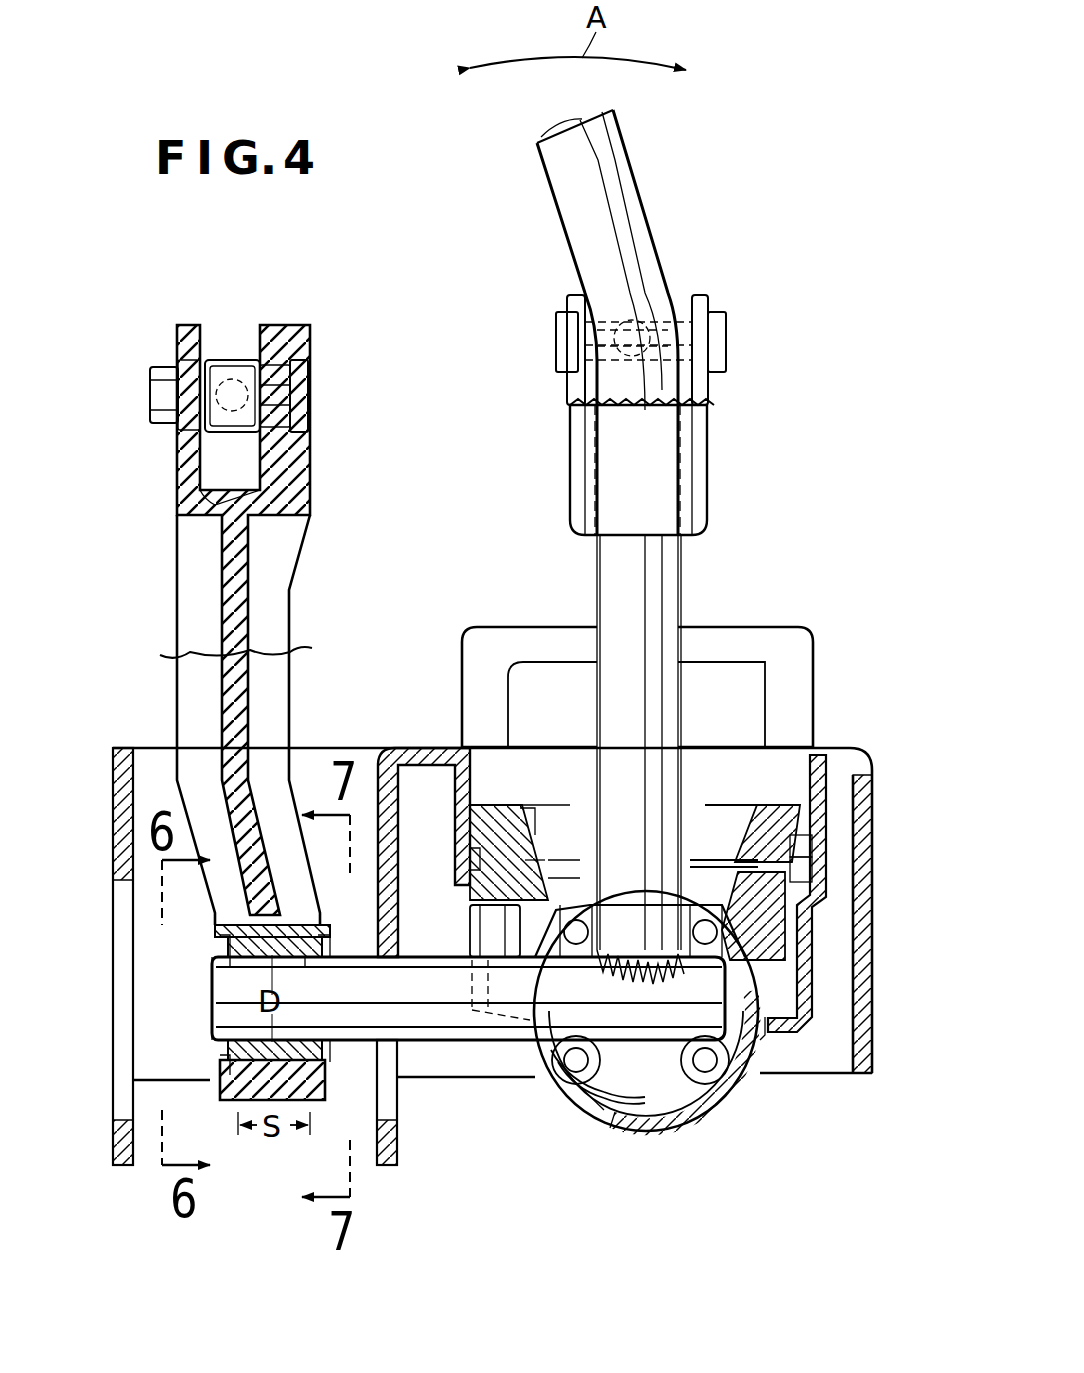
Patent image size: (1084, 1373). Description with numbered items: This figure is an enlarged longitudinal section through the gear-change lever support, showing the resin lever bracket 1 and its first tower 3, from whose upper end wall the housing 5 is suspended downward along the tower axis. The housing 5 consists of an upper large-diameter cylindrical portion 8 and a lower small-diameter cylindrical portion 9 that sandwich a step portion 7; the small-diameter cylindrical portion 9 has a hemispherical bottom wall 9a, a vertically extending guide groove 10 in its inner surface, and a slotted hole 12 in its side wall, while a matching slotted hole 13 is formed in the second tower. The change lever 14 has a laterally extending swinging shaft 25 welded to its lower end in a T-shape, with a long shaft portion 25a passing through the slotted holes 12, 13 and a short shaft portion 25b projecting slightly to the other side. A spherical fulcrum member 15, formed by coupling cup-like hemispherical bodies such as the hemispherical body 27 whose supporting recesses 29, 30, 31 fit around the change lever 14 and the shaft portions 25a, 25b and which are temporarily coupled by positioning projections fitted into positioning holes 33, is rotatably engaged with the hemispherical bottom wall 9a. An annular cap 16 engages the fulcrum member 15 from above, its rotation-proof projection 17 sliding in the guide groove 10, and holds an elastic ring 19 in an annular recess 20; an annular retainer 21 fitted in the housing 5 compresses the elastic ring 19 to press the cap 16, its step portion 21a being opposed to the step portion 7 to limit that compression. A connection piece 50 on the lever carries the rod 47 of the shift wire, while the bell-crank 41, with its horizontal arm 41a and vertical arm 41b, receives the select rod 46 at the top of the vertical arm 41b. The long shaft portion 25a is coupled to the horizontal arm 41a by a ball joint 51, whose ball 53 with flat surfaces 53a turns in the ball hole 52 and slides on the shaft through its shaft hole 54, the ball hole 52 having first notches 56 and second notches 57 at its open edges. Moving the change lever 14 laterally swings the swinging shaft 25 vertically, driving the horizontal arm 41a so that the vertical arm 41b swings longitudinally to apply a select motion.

The lever bracket 1 is at (860, 745).
The first tower 3 is at (860, 925).
The housing 5 is at (812, 1003).
The step portion 7 is at (468, 862).
The large-diameter cylindrical portion 8 is at (455, 796).
The small-diameter cylindrical portion 9 is at (470, 935).
The hemispherical bottom wall 9a is at (608, 1118).
The guide groove 10 is at (810, 846).
The slotted hole 12 is at (548, 1082).
The slotted hole 13 is at (380, 1122).
The change lever 14 is at (660, 196).
The fulcrum member 15 is at (602, 1112).
The cap 16 is at (798, 935).
The rotation-proof projection 17 is at (812, 880).
The elastic ring 19 is at (537, 826).
The annular recess 20 is at (530, 847).
The retainer 21 is at (760, 824).
The step portion 21a is at (470, 850).
The swinging shaft 25 is at (395, 914).
The long shaft portion 25a is at (455, 1040).
The short shaft portion 25b is at (762, 1040).
The hemispherical body 27 is at (690, 1118).
The supporting recess 29 is at (603, 915).
The supporting recess 30 is at (538, 1042).
The supporting recess 31 is at (705, 1027).
The positioning hole 33 is at (740, 866).
The bell-crank 41 is at (297, 618).
The horizontal arm 41a is at (222, 1100).
The vertical arm 41b is at (284, 333).
The rod 46 is at (232, 378).
The rod 47 is at (632, 320).
The connection piece 50 is at (705, 298).
The ball joint 51 is at (198, 985).
The ball hole 52 is at (285, 930).
The ball 53 is at (228, 948).
The flat surface 53a is at (230, 967).
The shaft hole 54 is at (230, 1040).
The first notch 56 is at (222, 935).
The second notch 57 is at (324, 945).